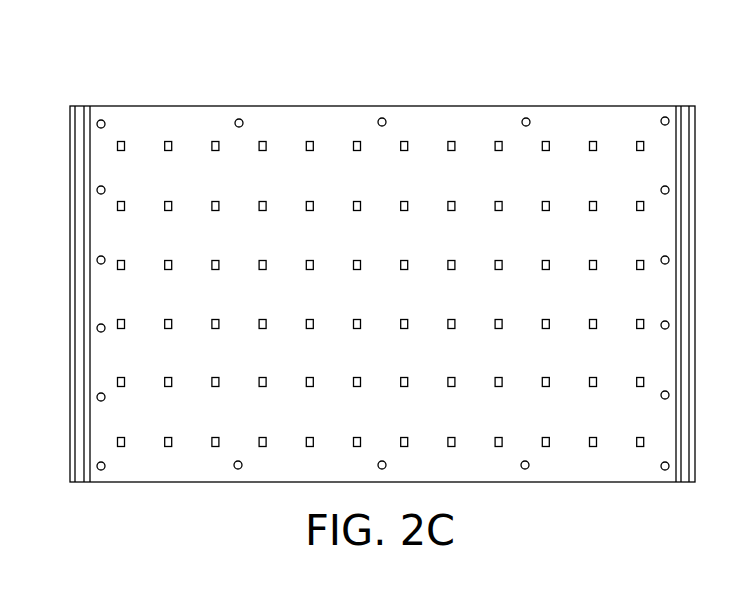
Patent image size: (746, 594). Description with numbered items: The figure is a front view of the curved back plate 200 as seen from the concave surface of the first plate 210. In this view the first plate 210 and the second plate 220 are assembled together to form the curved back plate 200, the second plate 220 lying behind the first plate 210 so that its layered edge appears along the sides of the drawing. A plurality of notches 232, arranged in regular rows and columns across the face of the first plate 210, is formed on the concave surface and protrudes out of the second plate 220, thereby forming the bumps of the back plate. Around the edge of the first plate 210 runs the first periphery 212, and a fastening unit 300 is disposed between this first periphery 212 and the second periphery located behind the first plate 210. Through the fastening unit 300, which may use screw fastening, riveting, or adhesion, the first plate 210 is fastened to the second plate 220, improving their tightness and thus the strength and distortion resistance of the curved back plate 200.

The curved back plate 200 is at (98, 45).
The first plate 210 is at (189, 105).
The first periphery 212 is at (294, 115).
The second plate 220 is at (70, 145).
The notches 232 is at (405, 140).
The fastening unit 300 is at (527, 118).